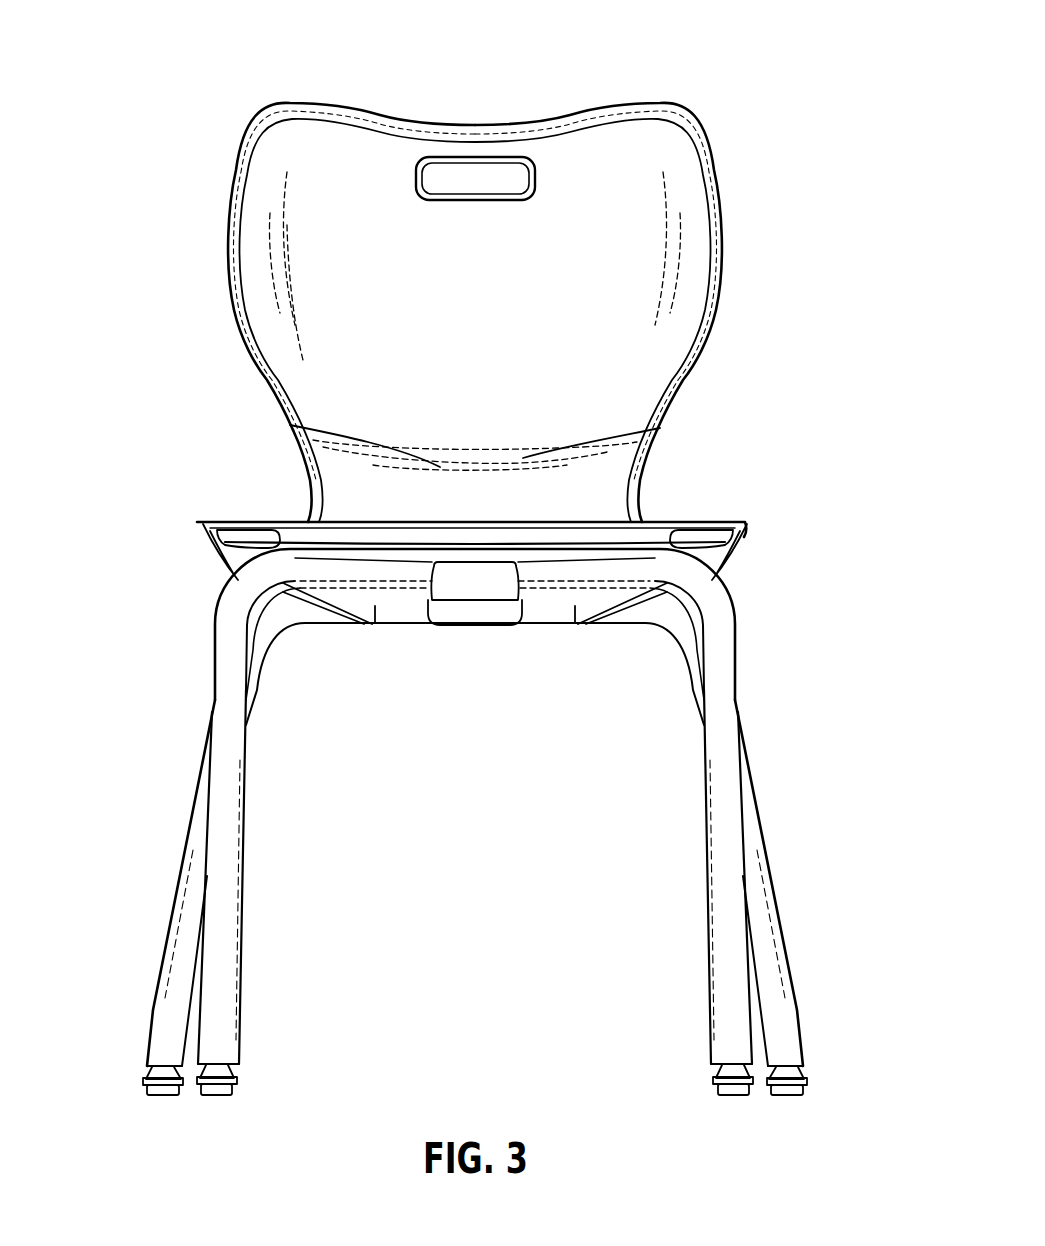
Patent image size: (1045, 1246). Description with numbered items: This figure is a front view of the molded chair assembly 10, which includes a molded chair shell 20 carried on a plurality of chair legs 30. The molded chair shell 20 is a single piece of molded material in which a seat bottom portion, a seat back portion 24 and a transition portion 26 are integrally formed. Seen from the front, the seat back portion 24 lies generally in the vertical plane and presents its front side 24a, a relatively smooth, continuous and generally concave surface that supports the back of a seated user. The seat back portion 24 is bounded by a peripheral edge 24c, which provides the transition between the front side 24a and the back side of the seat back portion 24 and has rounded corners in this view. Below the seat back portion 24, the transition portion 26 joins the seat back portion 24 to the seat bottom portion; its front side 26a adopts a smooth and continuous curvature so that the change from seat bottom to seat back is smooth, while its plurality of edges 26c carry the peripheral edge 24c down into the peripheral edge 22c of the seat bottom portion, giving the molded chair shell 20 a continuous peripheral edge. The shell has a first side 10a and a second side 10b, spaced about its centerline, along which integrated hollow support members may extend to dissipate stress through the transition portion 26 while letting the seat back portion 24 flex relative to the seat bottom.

The chair assembly 10 is at (870, 208).
The side of the molded chair shell 10a is at (730, 355).
The second side of the molded chair shell 10b is at (237, 356).
The molded chair shell 20 is at (417, 106).
The peripheral edge of the seat bottom portion 22c is at (203, 520).
The seat back portion 24 is at (507, 320).
The front side of the seat back portion 24a is at (528, 277).
The peripheral edge of the seat back portion 24c is at (233, 182).
The transition portion 26 is at (630, 430).
The front side of the transition portion 26a is at (320, 430).
The edges of the transition portion 26c is at (307, 493).
The chair legs 30 is at (710, 977).